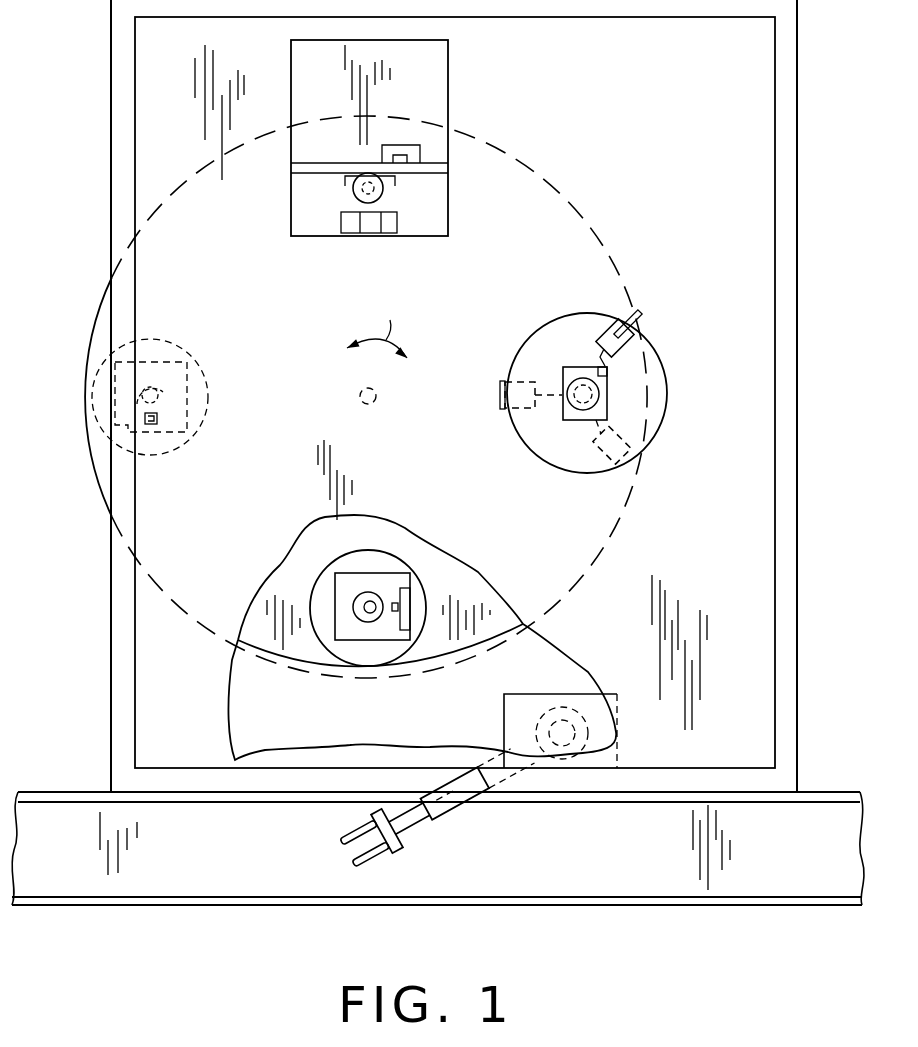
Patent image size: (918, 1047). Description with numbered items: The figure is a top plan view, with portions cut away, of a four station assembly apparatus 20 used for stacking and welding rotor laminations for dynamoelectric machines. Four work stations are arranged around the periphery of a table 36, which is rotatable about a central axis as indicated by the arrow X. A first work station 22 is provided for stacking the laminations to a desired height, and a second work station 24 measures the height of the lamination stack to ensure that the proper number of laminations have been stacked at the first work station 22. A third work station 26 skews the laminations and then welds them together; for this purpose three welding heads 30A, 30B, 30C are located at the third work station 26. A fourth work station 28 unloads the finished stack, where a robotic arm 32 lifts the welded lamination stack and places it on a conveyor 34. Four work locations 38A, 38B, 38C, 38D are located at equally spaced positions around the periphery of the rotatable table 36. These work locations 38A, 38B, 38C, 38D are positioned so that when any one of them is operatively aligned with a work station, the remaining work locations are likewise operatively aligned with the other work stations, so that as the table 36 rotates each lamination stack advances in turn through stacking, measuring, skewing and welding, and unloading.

The four station assembly apparatus 20 is at (808, 724).
The first work station 22 is at (82, 415).
The second work station 24 is at (467, 122).
The third work station 26 is at (668, 418).
The fourth work station 28 is at (353, 680).
The welding head 30A is at (632, 322).
The welding head 30B is at (625, 466).
The welding head 30C is at (503, 393).
The robotic arm 32 is at (468, 800).
The conveyor 34 is at (648, 905).
The table 36 is at (93, 470).
The work location 38A is at (138, 389).
The work location 38B is at (382, 205).
The work location 38C is at (578, 420).
The work location 38D is at (383, 603).